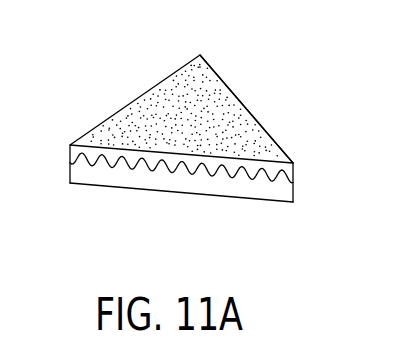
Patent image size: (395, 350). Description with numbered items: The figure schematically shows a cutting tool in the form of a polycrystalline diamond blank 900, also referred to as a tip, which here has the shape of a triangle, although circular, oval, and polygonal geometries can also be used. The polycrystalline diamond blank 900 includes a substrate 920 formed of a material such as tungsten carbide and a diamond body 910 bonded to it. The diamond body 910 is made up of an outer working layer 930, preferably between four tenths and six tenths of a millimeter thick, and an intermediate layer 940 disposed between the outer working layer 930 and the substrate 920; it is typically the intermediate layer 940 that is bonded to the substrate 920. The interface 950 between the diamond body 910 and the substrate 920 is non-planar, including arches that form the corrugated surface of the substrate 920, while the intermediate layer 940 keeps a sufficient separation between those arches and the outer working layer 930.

The polycrystalline diamond blank 900 is at (186, 151).
The diamond body 910 is at (158, 90).
The substrate 920 is at (267, 187).
The outer working layer 930 is at (256, 123).
The intermediate layer 940 is at (295, 172).
The interface 950 is at (70, 172).